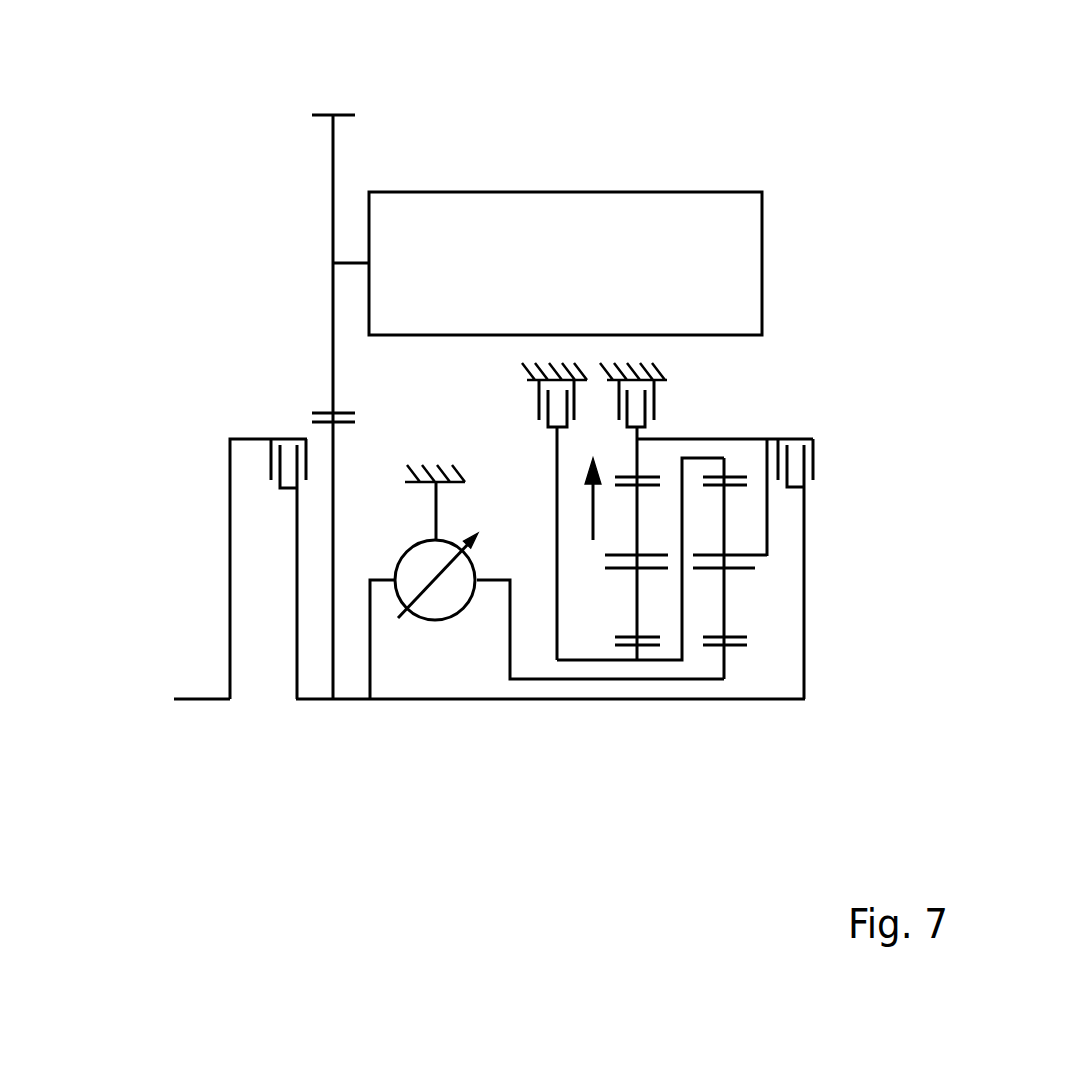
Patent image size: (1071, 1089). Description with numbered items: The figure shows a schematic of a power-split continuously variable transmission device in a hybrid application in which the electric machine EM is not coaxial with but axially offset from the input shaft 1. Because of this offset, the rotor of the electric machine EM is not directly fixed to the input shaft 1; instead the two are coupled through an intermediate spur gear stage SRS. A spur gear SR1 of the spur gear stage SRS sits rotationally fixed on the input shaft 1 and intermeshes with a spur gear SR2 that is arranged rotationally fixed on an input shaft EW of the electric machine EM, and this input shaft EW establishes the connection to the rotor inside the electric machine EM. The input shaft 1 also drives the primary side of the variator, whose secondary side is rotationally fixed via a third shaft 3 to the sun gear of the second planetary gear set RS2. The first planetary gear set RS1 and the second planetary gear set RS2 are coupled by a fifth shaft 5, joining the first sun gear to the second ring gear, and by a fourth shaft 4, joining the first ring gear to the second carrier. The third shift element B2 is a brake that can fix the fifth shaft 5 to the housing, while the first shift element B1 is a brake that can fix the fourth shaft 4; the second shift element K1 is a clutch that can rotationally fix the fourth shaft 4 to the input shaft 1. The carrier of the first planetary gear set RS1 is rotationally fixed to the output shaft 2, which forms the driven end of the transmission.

The spur gear SR1 is at (327, 437).
The spur gear SR2 is at (333, 193).
The spur gear stage SRS is at (298, 402).
The input shaft of the electric machine EW is at (345, 262).
The electric machine EM is at (559, 178).
The first shift element B1 is at (672, 399).
The third shift element B2 is at (527, 399).
The second shift element K1 is at (825, 465).
The first planetary gear set RS1 is at (637, 722).
The second planetary gear set RS2 is at (725, 722).
The input shaft 1 is at (350, 700).
The output shaft 2 is at (593, 513).
The third shaft 3 is at (525, 690).
The fourth shaft 4 is at (728, 439).
The fifth shaft 5 is at (583, 660).